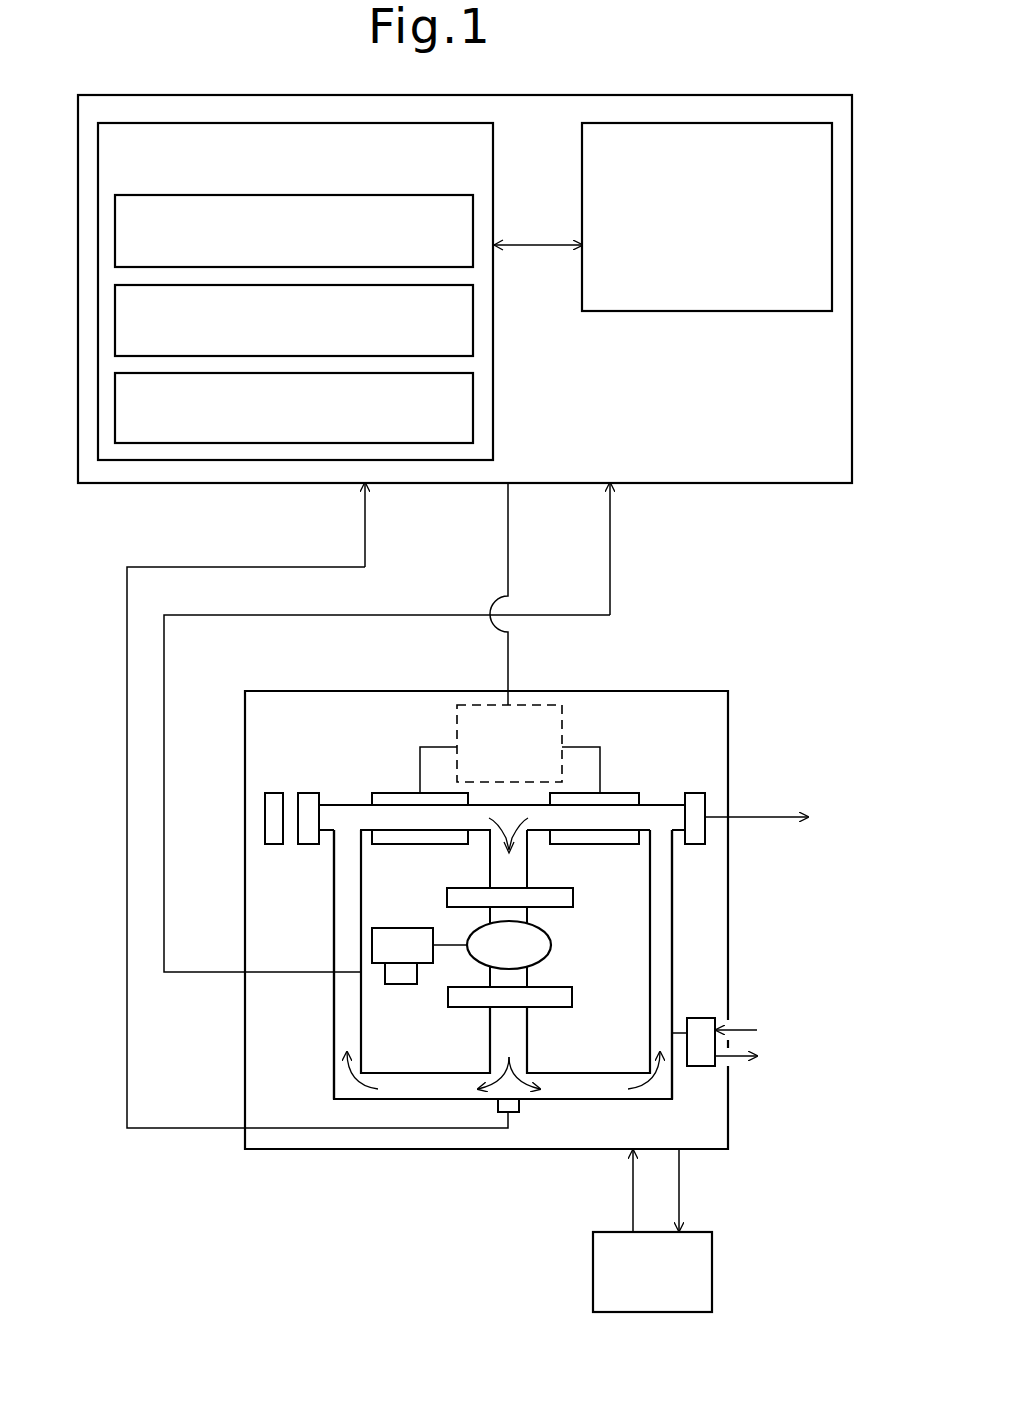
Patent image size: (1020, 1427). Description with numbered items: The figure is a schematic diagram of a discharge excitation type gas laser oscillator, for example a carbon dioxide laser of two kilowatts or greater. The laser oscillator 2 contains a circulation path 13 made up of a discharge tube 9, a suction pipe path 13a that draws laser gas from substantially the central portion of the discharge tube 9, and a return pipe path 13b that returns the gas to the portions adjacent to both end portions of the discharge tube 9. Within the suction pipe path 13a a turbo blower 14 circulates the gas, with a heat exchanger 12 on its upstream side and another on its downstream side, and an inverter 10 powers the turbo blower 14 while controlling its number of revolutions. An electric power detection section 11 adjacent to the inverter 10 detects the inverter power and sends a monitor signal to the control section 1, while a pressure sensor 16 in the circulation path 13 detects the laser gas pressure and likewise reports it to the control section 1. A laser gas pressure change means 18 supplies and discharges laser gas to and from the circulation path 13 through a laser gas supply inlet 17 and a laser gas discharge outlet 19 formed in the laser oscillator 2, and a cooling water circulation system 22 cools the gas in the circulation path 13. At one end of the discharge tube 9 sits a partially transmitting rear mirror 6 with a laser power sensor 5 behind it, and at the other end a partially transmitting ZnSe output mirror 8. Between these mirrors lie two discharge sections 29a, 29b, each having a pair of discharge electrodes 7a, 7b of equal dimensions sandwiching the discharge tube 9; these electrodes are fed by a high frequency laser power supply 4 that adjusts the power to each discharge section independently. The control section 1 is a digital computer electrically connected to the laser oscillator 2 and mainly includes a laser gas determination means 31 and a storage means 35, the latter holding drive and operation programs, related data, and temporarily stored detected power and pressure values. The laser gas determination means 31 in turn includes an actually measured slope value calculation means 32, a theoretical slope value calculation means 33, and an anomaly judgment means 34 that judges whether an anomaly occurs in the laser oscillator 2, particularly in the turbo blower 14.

The control section 1 is at (800, 95).
The laser gas determination means 31 is at (493, 140).
The actually measured slope value calculation means 32 is at (473, 210).
The theoretical slope value calculation means 33 is at (473, 311).
The anomaly judgment means 34 is at (473, 411).
The storage means 35 is at (716, 311).
The laser oscillator 2 is at (372, 691).
The laser power supply 4 is at (485, 705).
The laser power sensor 5 is at (274, 793).
The rear mirror 6 is at (312, 793).
The discharge electrode 7a is at (400, 800).
The discharge electrode 7b is at (625, 793).
The output mirror 8 is at (705, 823).
The discharge tube 9 is at (480, 823).
The inverter 10 is at (393, 927).
The electric power detection section 11 is at (402, 985).
The heat exchanger 12 is at (575, 905).
The circulation path 13 is at (333, 928).
The suction pipe path 13a is at (503, 1035).
The return pipe path 13b is at (345, 1010).
The turbo blower 14 is at (552, 953).
The pressure sensor 16 is at (513, 1113).
The laser gas supply inlet 17 is at (733, 1022).
The laser gas pressure change means 18 is at (700, 1066).
The laser gas discharge outlet 19 is at (735, 1064).
The cooling water circulation system 22 is at (593, 1262).
The discharge section 29a is at (376, 784).
The discharge section 29b is at (606, 851).